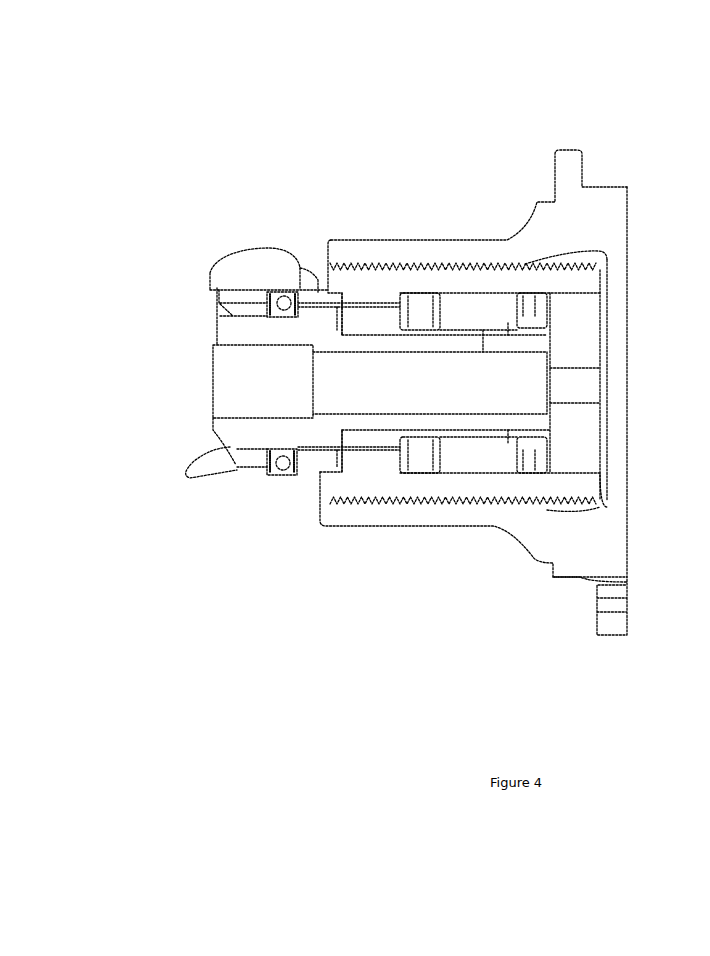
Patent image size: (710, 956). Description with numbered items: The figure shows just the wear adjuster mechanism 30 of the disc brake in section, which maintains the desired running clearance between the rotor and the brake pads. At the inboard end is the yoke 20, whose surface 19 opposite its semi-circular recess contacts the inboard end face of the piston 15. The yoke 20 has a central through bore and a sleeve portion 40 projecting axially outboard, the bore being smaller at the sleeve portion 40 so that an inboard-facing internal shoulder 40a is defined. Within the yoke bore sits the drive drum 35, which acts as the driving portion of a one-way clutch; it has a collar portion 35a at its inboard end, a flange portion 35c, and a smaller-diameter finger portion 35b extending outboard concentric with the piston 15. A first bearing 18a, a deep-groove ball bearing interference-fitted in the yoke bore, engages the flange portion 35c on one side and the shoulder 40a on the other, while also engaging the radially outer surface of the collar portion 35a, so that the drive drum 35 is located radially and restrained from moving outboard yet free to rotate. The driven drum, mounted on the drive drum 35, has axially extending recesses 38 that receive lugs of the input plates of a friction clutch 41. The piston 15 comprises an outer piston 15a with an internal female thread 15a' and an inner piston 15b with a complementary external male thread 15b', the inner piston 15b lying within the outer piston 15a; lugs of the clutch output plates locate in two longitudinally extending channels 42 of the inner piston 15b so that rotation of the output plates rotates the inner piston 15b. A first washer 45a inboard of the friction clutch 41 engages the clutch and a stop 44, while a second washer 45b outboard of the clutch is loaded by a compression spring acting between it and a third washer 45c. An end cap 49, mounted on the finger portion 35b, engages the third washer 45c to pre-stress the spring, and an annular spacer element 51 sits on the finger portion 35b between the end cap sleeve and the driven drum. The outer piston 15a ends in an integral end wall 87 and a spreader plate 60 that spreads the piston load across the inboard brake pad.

The piston 15 is at (403, 237).
The outer piston 15a is at (463, 179).
The internal female thread 15a' is at (463, 562).
The inner piston 15b is at (566, 595).
The external male thread 15b' is at (587, 610).
The first bearing 18a is at (285, 468).
The surface of the yoke 19 is at (310, 282).
The yoke 20 is at (237, 275).
The wear adjuster mechanism 30 is at (358, 640).
The drive drum 35 is at (340, 330).
The collar portion 35a is at (265, 328).
The finger portion 35b is at (461, 345).
The flange portion 35c is at (270, 297).
The axially extending recesses 38 is at (404, 493).
The sleeve portion 40 is at (327, 467).
The internal shoulder 40a is at (298, 463).
The friction clutch 41 is at (458, 332).
The longitudinally extending channels 42 is at (578, 388).
The stop 44 is at (420, 303).
The first washer 45a is at (403, 468).
The second washer 45b is at (440, 458).
The third washer 45c is at (523, 297).
The end cap 49 is at (543, 313).
The annular spacer element 51 is at (483, 330).
The spreader plate 60 is at (612, 200).
The end wall 87 is at (612, 428).